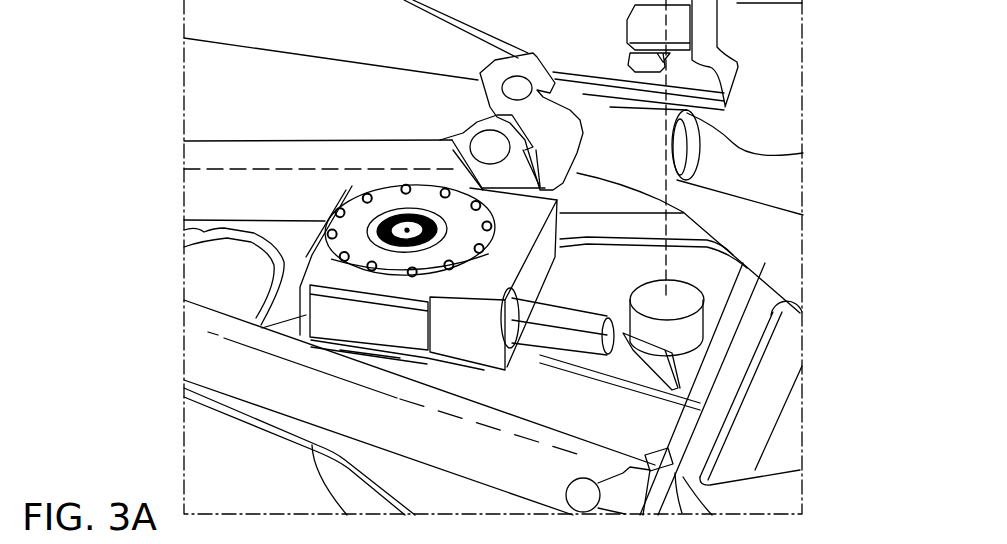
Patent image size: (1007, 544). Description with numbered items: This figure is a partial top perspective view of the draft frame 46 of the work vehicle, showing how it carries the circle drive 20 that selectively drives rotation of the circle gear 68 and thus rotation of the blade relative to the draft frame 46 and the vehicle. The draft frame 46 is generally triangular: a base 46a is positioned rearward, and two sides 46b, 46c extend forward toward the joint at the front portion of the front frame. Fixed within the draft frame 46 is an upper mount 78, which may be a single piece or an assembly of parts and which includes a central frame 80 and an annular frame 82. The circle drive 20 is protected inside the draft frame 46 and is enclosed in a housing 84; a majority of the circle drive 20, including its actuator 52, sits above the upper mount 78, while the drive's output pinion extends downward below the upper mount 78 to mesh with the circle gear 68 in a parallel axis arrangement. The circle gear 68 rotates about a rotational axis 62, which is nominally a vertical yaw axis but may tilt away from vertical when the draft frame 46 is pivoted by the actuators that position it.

The circle drive 20 is at (314, 239).
The draft frame 46 is at (216, 413).
The base 46a is at (763, 407).
The side 46b is at (207, 357).
The side 46c is at (343, 157).
The actuator 52 is at (560, 357).
The rotational axis 62 is at (667, 178).
The circle gear 68 is at (317, 477).
The upper mount 78 is at (572, 388).
The central frame 80 is at (623, 373).
The annular frame 82 is at (594, 248).
The housing 84 is at (386, 178).